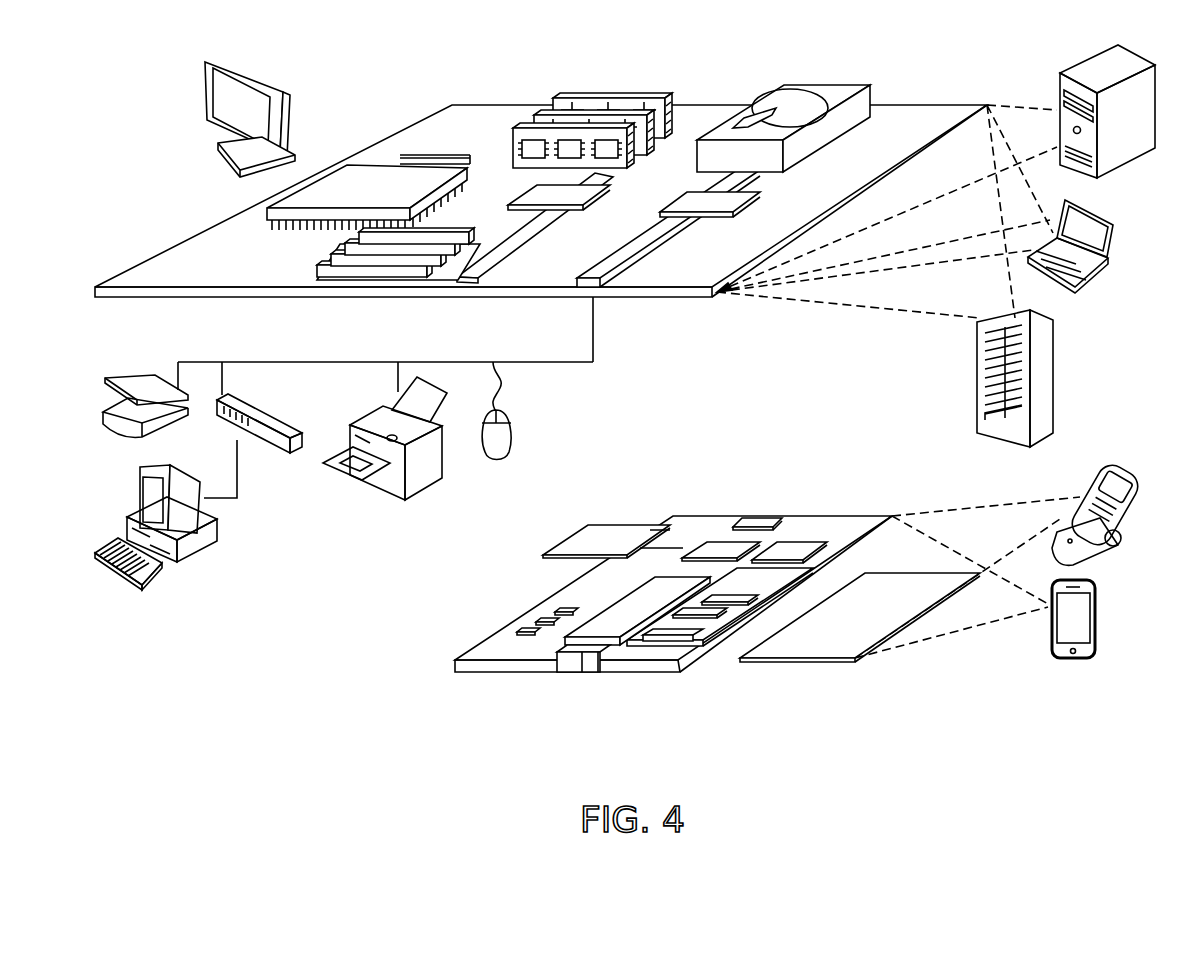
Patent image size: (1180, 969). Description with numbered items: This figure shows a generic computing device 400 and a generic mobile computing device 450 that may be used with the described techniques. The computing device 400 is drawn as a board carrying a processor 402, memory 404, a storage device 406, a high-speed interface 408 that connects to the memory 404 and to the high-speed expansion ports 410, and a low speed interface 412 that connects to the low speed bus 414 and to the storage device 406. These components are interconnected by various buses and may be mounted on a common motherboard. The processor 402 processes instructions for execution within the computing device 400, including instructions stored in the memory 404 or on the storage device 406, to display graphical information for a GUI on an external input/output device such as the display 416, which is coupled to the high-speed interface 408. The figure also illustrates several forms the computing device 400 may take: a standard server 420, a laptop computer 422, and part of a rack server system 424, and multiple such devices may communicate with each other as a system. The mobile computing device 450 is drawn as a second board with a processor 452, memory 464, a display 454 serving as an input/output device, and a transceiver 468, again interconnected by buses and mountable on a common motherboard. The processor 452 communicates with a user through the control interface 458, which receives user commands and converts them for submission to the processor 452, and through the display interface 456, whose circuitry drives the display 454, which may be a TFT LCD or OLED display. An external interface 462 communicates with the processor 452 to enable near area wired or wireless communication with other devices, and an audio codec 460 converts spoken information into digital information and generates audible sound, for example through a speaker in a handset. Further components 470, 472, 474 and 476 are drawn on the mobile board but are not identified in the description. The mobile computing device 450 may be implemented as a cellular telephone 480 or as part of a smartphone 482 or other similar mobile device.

The computing device 400 is at (382, 82).
The processor 402 is at (266, 211).
The memory 404 is at (560, 98).
The storage device 406 is at (772, 86).
The high-speed interface 408 is at (537, 195).
The high-speed expansion ports 410 is at (333, 259).
The low speed interface 412 is at (697, 197).
The low speed bus 414 is at (602, 293).
The display 416 is at (208, 62).
The standard server 420 is at (1052, 90).
The laptop computer 422 is at (1128, 218).
The rack server system 424 is at (977, 400).
The mobile computing device 450 is at (432, 664).
The processor 452 is at (612, 632).
The display 454 is at (825, 647).
The display interface 456 is at (688, 640).
The control interface 458 is at (718, 623).
The audio codec 460 is at (730, 597).
The external interface 462 is at (583, 657).
The memory 464 is at (540, 617).
The transceiver 468 is at (788, 550).
The antenna module 470 is at (765, 517).
The battery interface 472 is at (652, 527).
The battery 474 is at (588, 527).
The processor 476 is at (722, 547).
The cellular telephone 480 is at (1100, 473).
The smartphone 482 is at (1050, 637).